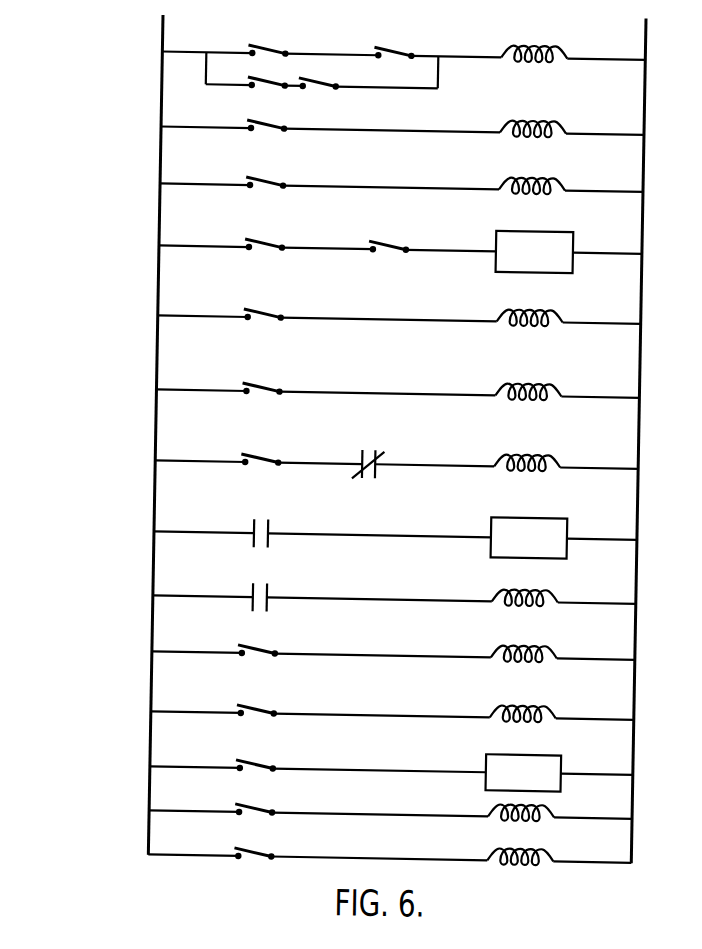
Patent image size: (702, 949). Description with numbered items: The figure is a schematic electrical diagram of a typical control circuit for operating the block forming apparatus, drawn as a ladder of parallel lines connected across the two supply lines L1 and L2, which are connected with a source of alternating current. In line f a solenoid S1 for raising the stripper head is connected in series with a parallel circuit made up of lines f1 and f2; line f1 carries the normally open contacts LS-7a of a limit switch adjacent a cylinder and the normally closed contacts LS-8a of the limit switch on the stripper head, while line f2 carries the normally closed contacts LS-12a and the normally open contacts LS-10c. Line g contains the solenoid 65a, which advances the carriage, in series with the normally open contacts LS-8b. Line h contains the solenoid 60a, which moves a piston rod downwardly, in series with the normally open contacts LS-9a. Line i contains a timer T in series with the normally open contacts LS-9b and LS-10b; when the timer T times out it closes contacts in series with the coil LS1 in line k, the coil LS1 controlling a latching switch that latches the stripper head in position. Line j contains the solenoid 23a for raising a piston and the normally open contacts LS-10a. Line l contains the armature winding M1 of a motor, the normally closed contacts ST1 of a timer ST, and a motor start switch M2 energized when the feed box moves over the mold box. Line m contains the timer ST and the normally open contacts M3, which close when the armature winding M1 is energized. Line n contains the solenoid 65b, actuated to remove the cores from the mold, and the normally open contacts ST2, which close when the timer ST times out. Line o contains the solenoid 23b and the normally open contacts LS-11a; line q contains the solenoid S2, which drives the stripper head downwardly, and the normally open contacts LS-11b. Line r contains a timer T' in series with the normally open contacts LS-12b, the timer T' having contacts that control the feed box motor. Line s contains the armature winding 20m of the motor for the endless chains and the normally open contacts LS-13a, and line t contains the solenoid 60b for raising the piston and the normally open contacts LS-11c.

The line L1 is at (162, 25).
The line L2 is at (647, 22).
The normally closed contacts LS-8a is at (254, 46).
The normally open contacts LS-7a is at (379, 50).
The line f1 is at (432, 51).
The line f2 is at (413, 85).
The solenoid S1 is at (540, 33).
The line f is at (602, 51).
The normally open contacts LS-10c is at (258, 87).
The normally closed contacts LS-12a is at (322, 85).
The normally open contacts LS-8b is at (283, 133).
The solenoid 65a is at (527, 131).
The line g is at (600, 126).
The normally open contacts LS-9a is at (287, 186).
The solenoid 60a is at (530, 188).
The line h is at (601, 183).
The normally open contacts LS-10b is at (257, 249).
The normally open contacts LS-9b is at (392, 250).
The timer T is at (535, 252).
The line i is at (601, 245).
The normally open contacts LS-10a is at (282, 311).
The solenoid 23a is at (520, 309).
The line j is at (614, 319).
The timer T' is at (402, 570).
The coil LS1 is at (530, 377).
The line k is at (603, 389).
The motor start switch M2 is at (262, 457).
The normally closed contacts ST1 is at (378, 450).
The armature winding M1 is at (519, 450).
The line l is at (605, 460).
The normally open contacts M3 is at (278, 527).
The timer ST is at (554, 545).
The line m is at (603, 528).
The normally open contacts ST2 is at (278, 592).
The line n is at (605, 592).
The normally open contacts LS-11a is at (281, 648).
The solenoid 65b is at (516, 600).
The line o is at (607, 651).
The normally open contacts LS-11b is at (284, 709).
The solenoid 23b is at (518, 656).
The line q is at (606, 711).
The normally open contacts LS-12b is at (284, 762).
The solenoid S2 is at (524, 716).
The line r is at (601, 763).
The normally open contacts LS-13a is at (283, 806).
The armature winding 20m is at (496, 797).
The line s is at (603, 810).
The normally open contacts LS-11c is at (283, 850).
The solenoid 60b is at (533, 844).
The line t is at (605, 854).